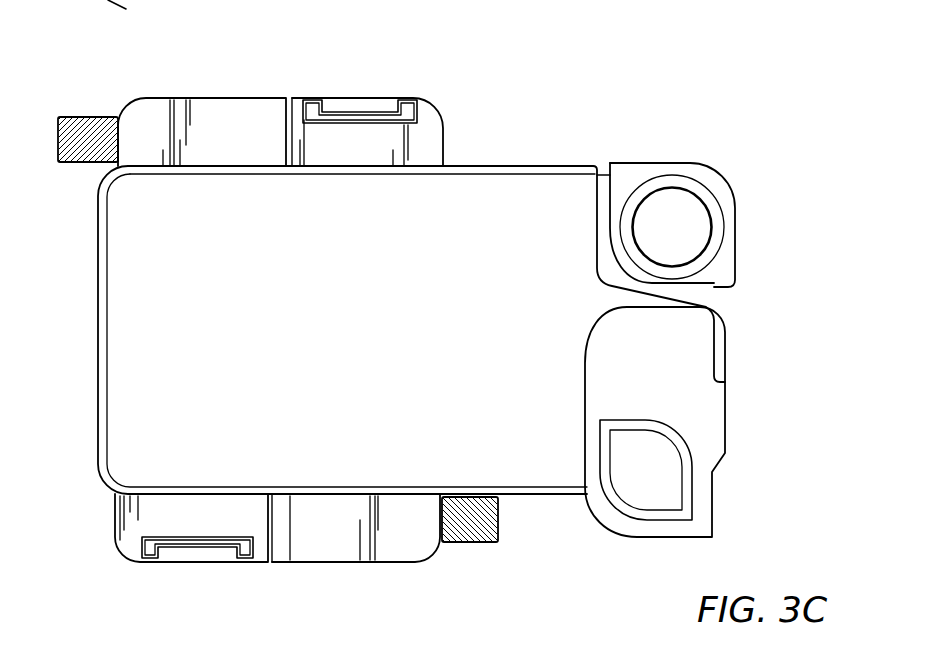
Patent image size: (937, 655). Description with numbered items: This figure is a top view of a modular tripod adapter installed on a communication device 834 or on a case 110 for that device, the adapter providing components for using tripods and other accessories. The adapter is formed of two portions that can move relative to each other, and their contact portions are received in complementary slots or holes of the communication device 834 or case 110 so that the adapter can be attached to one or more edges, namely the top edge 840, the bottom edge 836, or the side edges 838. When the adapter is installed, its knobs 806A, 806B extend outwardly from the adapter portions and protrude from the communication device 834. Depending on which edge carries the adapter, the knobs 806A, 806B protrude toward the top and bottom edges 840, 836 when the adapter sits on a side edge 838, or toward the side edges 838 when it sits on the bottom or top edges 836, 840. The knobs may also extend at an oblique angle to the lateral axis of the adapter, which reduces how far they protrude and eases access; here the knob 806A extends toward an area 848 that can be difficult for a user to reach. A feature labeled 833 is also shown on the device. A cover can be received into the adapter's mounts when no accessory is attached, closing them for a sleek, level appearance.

The case 110 is at (545, 163).
The knob 806A is at (473, 545).
The knob 806B is at (84, 116).
The top surface 833 is at (483, 167).
The communication device 834 is at (602, 183).
The bottom edge 836 is at (98, 300).
The side edge 838 is at (545, 495).
The top edge 840 is at (720, 300).
The area 848 is at (524, 537).